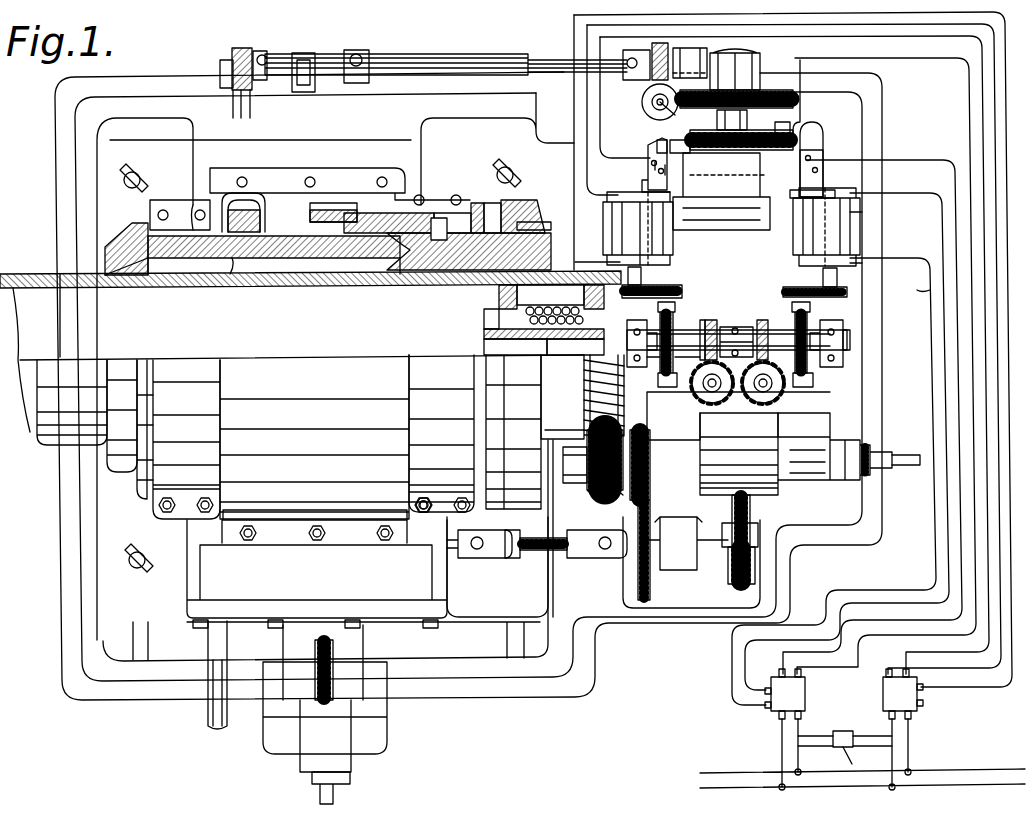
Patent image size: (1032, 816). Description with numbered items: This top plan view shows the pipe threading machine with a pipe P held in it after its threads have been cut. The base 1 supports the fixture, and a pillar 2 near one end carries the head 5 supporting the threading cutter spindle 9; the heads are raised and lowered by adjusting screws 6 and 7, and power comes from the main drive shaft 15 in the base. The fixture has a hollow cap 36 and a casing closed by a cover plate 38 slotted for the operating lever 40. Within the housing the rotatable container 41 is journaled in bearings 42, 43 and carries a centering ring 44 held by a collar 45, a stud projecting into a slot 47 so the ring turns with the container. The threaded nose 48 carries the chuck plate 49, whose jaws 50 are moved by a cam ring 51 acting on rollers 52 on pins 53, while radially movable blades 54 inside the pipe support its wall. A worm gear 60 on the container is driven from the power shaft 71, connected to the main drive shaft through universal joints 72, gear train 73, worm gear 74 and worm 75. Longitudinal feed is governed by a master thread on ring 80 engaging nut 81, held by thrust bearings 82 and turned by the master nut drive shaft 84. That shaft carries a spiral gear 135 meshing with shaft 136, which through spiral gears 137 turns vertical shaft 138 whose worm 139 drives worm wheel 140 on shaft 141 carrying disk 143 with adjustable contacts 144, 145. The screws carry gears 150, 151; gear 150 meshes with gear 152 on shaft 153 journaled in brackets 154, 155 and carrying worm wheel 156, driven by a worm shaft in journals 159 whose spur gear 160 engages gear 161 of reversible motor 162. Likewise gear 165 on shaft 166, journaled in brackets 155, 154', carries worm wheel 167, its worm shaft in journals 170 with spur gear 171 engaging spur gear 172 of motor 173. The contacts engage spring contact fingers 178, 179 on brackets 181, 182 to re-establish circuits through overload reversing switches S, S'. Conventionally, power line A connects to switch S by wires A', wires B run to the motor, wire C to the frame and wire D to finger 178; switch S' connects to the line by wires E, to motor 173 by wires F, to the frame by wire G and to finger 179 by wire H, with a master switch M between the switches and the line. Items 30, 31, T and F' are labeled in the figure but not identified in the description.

The base 1 is at (61, 606).
The pillar 2 is at (737, 300).
The head 5 is at (835, 446).
The adjusting screw 6 is at (700, 395).
The adjusting screw 7 is at (772, 396).
The threading cutter spindle 9 is at (902, 455).
The main drive shaft 15 is at (750, 503).
The pin 30 is at (340, 798).
The screw housing 31 is at (378, 735).
The cap 36 is at (405, 290).
The cover plate 38 is at (190, 612).
The operating lever 40 is at (208, 713).
The container 41 is at (290, 258).
The bearing 42 is at (444, 210).
The bearing 43 is at (172, 210).
The centering ring 44 is at (450, 272).
The collar 45 is at (418, 272).
The slot 47 is at (388, 270).
The nose 48 is at (460, 290).
The plate 49 is at (474, 213).
The jaws 50 is at (524, 222).
The cam ring 51 is at (486, 209).
The rollers 52 is at (522, 200).
The pins 53 is at (540, 245).
The blades 54 is at (544, 320).
The worm gear 60 is at (357, 216).
The power shaft 71 is at (462, 555).
The universal joints 72 is at (505, 555).
The gear train 73 is at (652, 580).
The worm gear 74 is at (728, 575).
The worm 75 is at (756, 566).
The ring 80 is at (232, 262).
The nut 81 is at (340, 186).
The thrust bearings 82 is at (220, 195).
The master nut drive shaft 84 is at (233, 105).
The spiral gear 135 is at (241, 48).
The shaft 136 is at (303, 54).
The spiral gears 137 is at (640, 80).
The vertically extending shaft 138 is at (667, 85).
The worm 139 is at (642, 108).
The worm wheel 140 is at (793, 101).
The shaft 141 is at (728, 48).
The disk 143 is at (745, 150).
The adjustable contacts 144 is at (728, 160).
The adjustable contacts 145 is at (777, 124).
The gear 150 is at (705, 395).
The gear 151 is at (770, 405).
The gear 152 is at (711, 320).
The shaft 153 is at (705, 355).
The bracket 154 is at (602, 343).
The bracket 154' is at (877, 349).
The bracket 155 is at (736, 327).
The worm wheel 156 is at (703, 320).
The journals 159 is at (676, 316).
The spur gear 160 is at (672, 287).
The gear 161 is at (641, 271).
The reversible motor 162 is at (615, 225).
The gear 165 is at (762, 320).
The shaft 166 is at (843, 342).
The worm wheel 167 is at (812, 310).
The journals 170 is at (813, 384).
The spur gear 171 is at (822, 285).
The spur gear 172 is at (855, 266).
The motor 173 is at (846, 226).
The spring contact finger 178 is at (660, 140).
The spring contact finger 179 is at (820, 130).
The bracket 181 is at (648, 172).
The bracket 182 is at (823, 172).
The pipe P is at (136, 288).
The thread T is at (603, 490).
The overload reversing switch S is at (903, 694).
The overload reversing switch S' is at (785, 694).
The master switch M is at (840, 731).
The power line A is at (862, 754).
The wires A' is at (921, 737).
The wires B is at (574, 104).
The wire C is at (910, 640).
The wire D is at (912, 656).
The wires E is at (782, 728).
The wires F is at (917, 287).
The lead F' is at (713, 665).
The wire G is at (830, 664).
The wire H is at (783, 660).